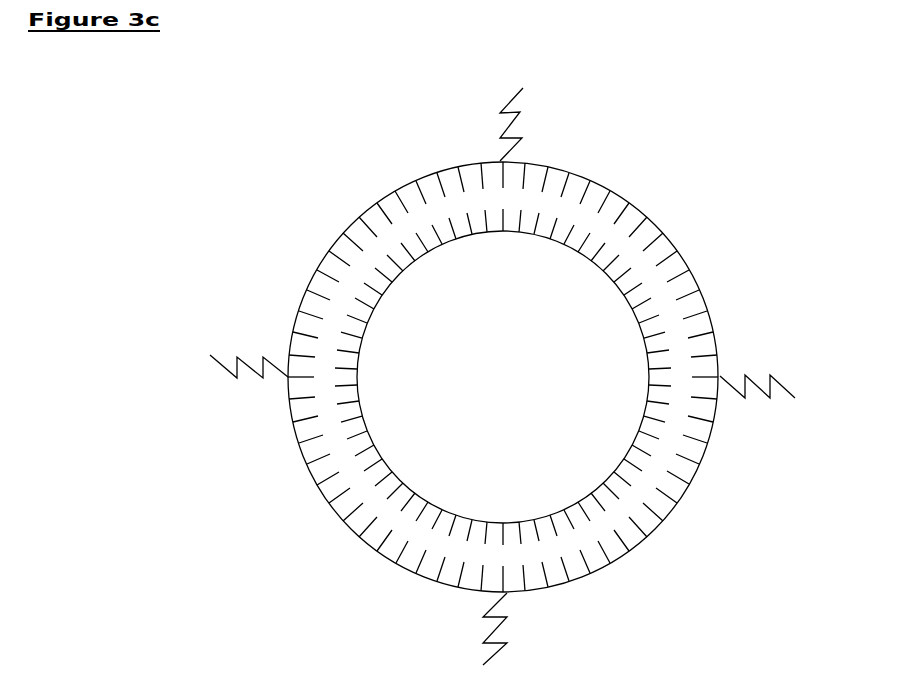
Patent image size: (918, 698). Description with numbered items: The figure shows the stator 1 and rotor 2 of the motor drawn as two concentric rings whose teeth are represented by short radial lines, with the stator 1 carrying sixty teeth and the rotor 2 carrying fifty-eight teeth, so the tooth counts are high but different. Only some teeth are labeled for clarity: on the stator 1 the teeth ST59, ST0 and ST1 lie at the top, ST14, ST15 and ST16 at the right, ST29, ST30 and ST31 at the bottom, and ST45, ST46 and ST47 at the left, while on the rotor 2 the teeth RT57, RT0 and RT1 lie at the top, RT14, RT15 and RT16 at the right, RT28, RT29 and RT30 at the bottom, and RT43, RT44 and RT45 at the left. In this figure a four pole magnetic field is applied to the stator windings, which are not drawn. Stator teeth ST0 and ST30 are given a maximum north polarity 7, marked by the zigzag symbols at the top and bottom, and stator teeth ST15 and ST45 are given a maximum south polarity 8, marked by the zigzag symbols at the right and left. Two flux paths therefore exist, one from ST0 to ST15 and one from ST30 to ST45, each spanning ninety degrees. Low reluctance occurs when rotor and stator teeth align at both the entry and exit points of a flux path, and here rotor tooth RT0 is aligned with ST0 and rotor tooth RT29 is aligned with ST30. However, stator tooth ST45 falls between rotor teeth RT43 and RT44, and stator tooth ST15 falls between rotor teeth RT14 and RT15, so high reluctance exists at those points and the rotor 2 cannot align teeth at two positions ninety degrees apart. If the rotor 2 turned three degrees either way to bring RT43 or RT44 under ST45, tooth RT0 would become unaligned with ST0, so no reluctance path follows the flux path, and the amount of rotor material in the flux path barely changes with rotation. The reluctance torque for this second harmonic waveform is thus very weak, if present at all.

The stator 1 is at (333, 243).
The rotor 2 is at (499, 395).
The maximum north polarity 7 is at (520, 112).
The maximum south polarity 8 is at (503, 370).
The stator tooth ST0 is at (493, 171).
The stator tooth ST1 is at (536, 177).
The stator tooth ST14 is at (707, 352).
The stator tooth ST15 is at (707, 373).
The stator tooth ST16 is at (707, 397).
The stator tooth ST29 is at (537, 582).
The stator tooth ST30 is at (517, 578).
The stator tooth ST31 is at (480, 572).
The stator tooth ST45 is at (280, 393).
The stator tooth ST46 is at (288, 347).
The stator tooth ST47 is at (294, 337).
The stator tooth ST59 is at (476, 170).
The rotor tooth RT0 is at (503, 232).
The rotor tooth RT1 is at (519, 232).
The rotor tooth RT14 is at (650, 364).
The rotor tooth RT15 is at (650, 382).
The rotor tooth RT16 is at (653, 398).
The rotor tooth RT28 is at (519, 522).
The rotor tooth RT29 is at (504, 522).
The rotor tooth RT30 is at (487, 522).
The rotor tooth RT43 is at (360, 392).
The rotor tooth RT44 is at (342, 370).
The rotor tooth RT45 is at (358, 353).
The rotor tooth RT57 is at (481, 232).